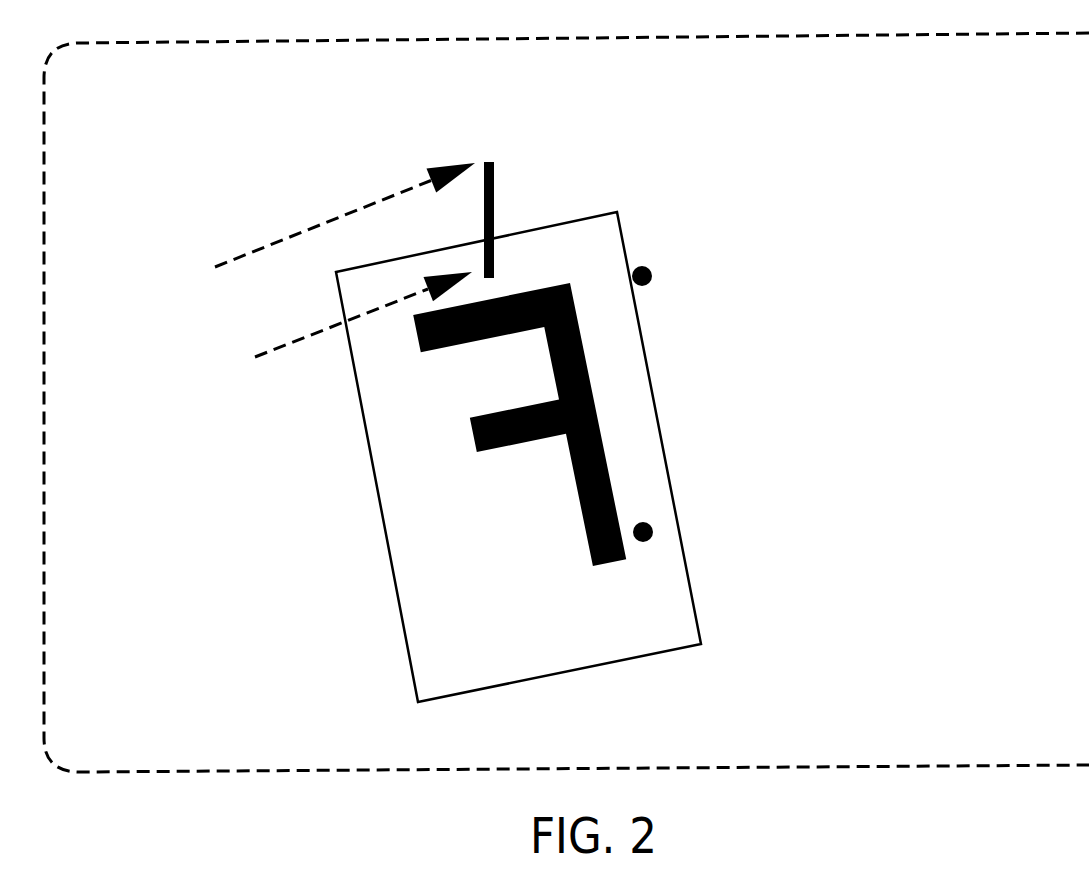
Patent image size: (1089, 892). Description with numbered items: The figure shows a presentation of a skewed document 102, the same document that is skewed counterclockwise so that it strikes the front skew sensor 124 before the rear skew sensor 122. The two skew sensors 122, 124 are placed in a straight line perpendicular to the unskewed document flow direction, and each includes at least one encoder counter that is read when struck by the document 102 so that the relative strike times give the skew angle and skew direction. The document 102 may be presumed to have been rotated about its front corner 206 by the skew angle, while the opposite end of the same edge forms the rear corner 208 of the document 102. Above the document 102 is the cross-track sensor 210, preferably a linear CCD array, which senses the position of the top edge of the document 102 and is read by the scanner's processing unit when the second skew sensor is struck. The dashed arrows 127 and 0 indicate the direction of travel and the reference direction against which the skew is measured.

The skewed document 102 is at (390, 562).
The cross-track sensor 210 is at (495, 208).
The rear corner 208 is at (659, 190).
The front corner 206 is at (755, 628).
The rear skew sensor 122 is at (835, 271).
The front skew sensor 124 is at (836, 527).
The process direction 127 is at (322, 332).
The reference direction 0 is at (324, 227).